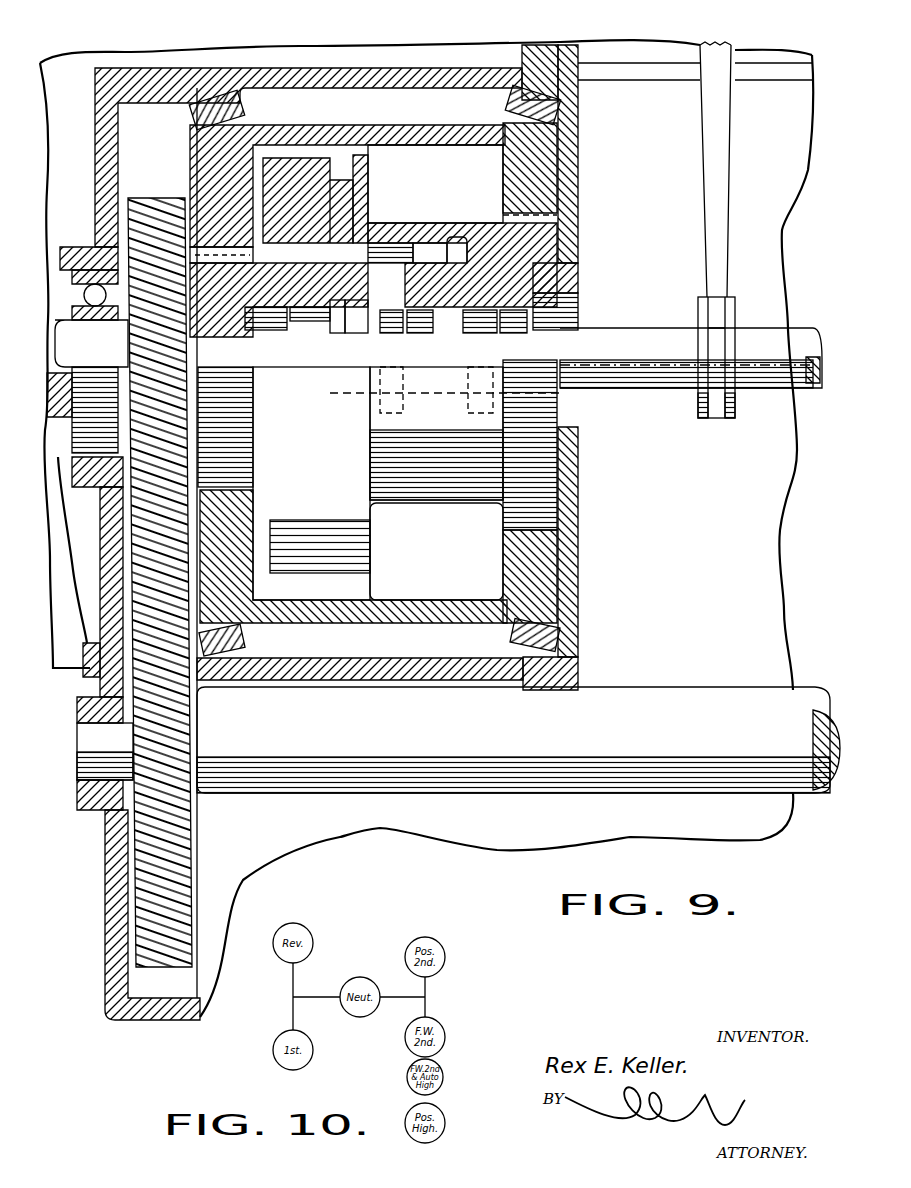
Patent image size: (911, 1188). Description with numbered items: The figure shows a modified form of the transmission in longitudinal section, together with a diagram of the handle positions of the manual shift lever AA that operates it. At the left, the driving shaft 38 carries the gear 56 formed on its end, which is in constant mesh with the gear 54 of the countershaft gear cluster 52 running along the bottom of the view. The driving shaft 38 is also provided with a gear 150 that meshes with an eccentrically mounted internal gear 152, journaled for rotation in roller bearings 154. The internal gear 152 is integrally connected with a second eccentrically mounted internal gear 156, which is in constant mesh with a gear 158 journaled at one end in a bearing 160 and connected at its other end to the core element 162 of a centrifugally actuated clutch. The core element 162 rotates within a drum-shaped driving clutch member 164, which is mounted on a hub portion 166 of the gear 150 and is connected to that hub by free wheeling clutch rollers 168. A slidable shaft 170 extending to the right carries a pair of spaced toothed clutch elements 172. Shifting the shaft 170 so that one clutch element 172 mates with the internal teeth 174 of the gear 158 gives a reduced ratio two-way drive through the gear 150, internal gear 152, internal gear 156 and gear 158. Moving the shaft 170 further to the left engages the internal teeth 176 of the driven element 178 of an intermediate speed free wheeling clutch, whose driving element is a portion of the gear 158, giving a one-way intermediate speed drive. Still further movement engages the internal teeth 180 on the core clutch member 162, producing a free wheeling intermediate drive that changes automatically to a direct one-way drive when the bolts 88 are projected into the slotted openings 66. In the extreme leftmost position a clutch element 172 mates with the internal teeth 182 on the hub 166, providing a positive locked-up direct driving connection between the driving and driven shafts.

The driving shaft 38 is at (91, 343).
The countershaft gear cluster 52 is at (630, 703).
The gear 54 is at (180, 743).
The gear 56 is at (170, 177).
The slotted openings 66 is at (337, 167).
The bolts 88 is at (360, 220).
The gear 150 is at (253, 475).
The internal gear 152 is at (253, 590).
The roller bearings 154 is at (560, 625).
The internal gear 156 is at (545, 553).
The gear 158 is at (537, 240).
The bearing 160 is at (540, 282).
The core element 162 is at (367, 218).
The driving clutch member 164 is at (293, 170).
The hub portion 166 is at (250, 327).
The free wheeling clutch rollers 168 is at (297, 322).
The slidable shaft 170 is at (773, 377).
The toothed clutch elements 172 is at (475, 333).
The teeth 174 is at (537, 323).
The teeth 176 is at (433, 317).
The driven element 178 is at (443, 280).
The teeth 180 is at (342, 335).
The teeth 182 is at (305, 325).
The shift lever AA is at (715, 185).